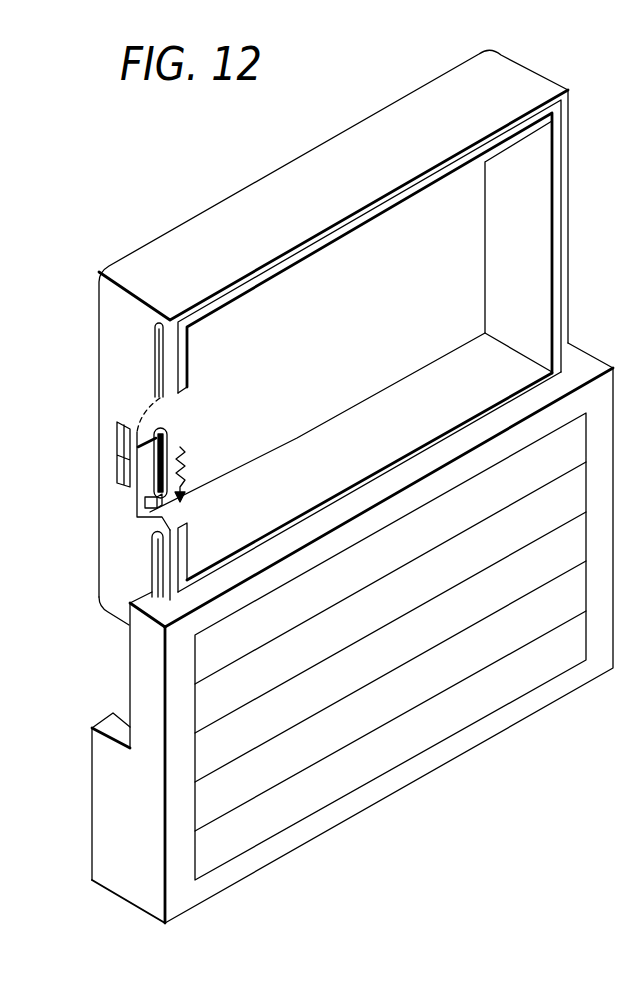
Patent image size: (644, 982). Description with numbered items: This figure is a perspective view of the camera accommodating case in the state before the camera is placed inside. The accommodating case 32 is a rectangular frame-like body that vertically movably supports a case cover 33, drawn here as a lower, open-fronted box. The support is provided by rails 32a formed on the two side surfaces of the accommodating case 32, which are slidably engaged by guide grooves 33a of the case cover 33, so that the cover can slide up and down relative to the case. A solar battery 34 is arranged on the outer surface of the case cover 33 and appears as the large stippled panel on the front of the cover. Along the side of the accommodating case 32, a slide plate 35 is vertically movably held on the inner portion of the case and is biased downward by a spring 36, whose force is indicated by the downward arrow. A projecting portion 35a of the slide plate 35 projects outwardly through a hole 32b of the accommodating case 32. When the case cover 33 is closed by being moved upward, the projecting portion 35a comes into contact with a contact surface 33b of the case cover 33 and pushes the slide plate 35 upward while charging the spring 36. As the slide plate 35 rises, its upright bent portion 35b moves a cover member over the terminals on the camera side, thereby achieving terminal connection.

The accommodating case 32 is at (280, 187).
The rail 32a is at (155, 368).
The hole 32b is at (117, 438).
The case cover 33 is at (205, 888).
The guide groove 33a is at (150, 592).
The contact surface 33b is at (113, 723).
The solar battery 34 is at (338, 795).
The slide plate 35 is at (167, 434).
The projecting portion 35a is at (138, 473).
The upright bent portion 35b is at (160, 505).
The spring 36 is at (186, 468).